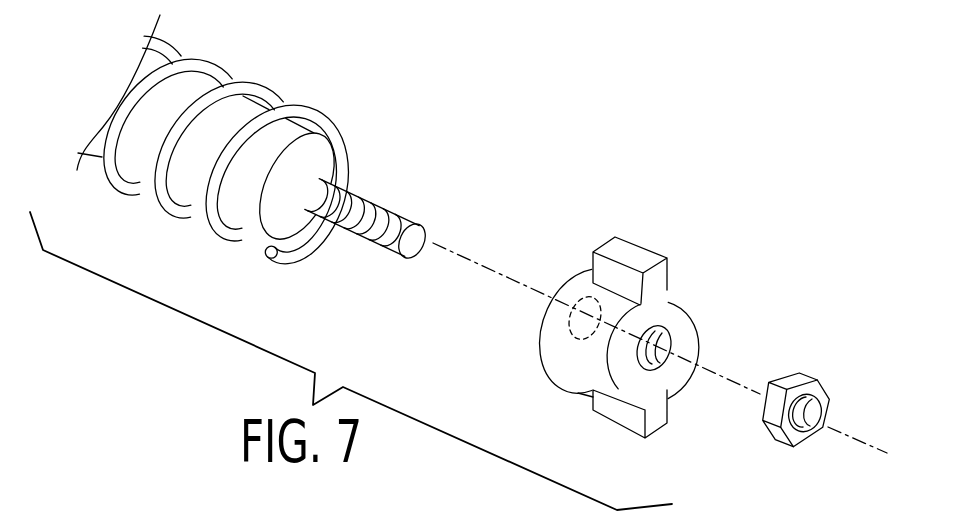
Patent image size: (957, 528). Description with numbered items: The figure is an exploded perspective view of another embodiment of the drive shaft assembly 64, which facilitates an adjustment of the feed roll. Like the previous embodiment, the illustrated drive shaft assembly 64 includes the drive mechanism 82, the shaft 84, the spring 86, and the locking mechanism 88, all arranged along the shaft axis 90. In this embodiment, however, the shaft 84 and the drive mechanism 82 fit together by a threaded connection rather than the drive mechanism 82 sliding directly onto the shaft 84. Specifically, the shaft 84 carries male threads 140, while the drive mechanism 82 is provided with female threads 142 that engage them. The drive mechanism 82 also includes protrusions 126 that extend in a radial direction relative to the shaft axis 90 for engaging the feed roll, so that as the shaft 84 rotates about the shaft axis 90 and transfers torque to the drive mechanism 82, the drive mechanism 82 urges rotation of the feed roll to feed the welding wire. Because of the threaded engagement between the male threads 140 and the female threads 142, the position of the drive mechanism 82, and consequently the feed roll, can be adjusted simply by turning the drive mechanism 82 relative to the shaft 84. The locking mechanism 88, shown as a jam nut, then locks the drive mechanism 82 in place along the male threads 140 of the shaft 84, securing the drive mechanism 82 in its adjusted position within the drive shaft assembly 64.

The drive shaft assembly 64 is at (492, 87).
The drive mechanism 82 is at (678, 317).
The shaft 84 is at (242, 110).
The spring 86 is at (173, 221).
The locking mechanism 88 is at (790, 392).
The shaft axis 90 is at (474, 263).
The protrusions 126 is at (633, 253).
The male threads 140 is at (357, 196).
The female threads 142 is at (655, 358).